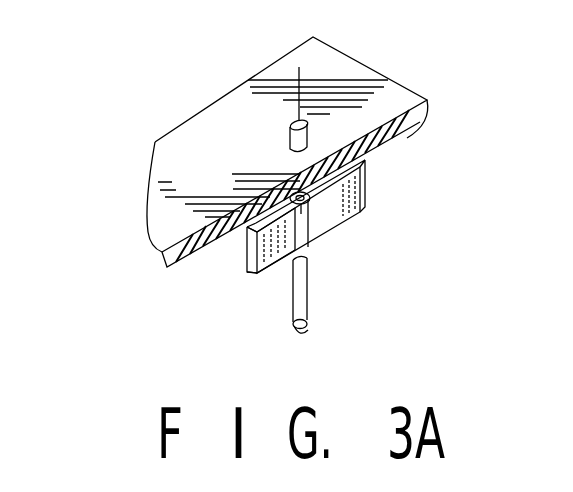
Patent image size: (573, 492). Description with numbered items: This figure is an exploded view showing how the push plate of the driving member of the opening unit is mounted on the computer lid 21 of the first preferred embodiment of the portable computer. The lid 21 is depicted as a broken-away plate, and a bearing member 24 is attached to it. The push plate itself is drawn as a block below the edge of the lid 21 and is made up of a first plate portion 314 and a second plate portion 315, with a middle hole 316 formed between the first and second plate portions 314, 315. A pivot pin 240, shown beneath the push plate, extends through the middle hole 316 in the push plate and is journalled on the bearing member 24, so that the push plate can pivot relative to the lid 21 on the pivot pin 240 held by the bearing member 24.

The computer lid 21 is at (390, 90).
The bearing member 24 is at (291, 137).
The pivot pin 240 is at (298, 333).
The first plate portion 314 is at (337, 212).
The second plate portion 315 is at (270, 242).
The middle hole 316 is at (301, 232).